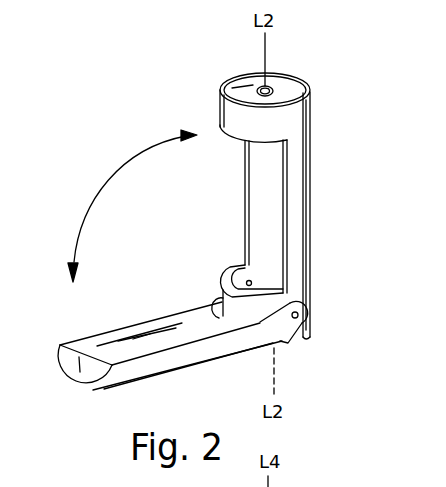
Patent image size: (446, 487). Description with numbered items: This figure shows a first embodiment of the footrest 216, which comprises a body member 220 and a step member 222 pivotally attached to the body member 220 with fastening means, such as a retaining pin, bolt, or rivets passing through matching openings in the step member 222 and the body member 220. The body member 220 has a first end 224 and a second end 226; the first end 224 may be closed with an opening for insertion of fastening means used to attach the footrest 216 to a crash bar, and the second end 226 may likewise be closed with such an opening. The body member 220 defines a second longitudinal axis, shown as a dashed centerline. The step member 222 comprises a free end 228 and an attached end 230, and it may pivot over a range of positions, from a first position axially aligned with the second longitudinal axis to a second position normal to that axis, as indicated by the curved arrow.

The footrest 216 is at (318, 157).
The body member 220 is at (310, 242).
The step member 222 is at (82, 398).
The first end 224 is at (297, 92).
The second end 226 is at (310, 337).
The free end 228 is at (63, 362).
The attached end 230 is at (286, 340).